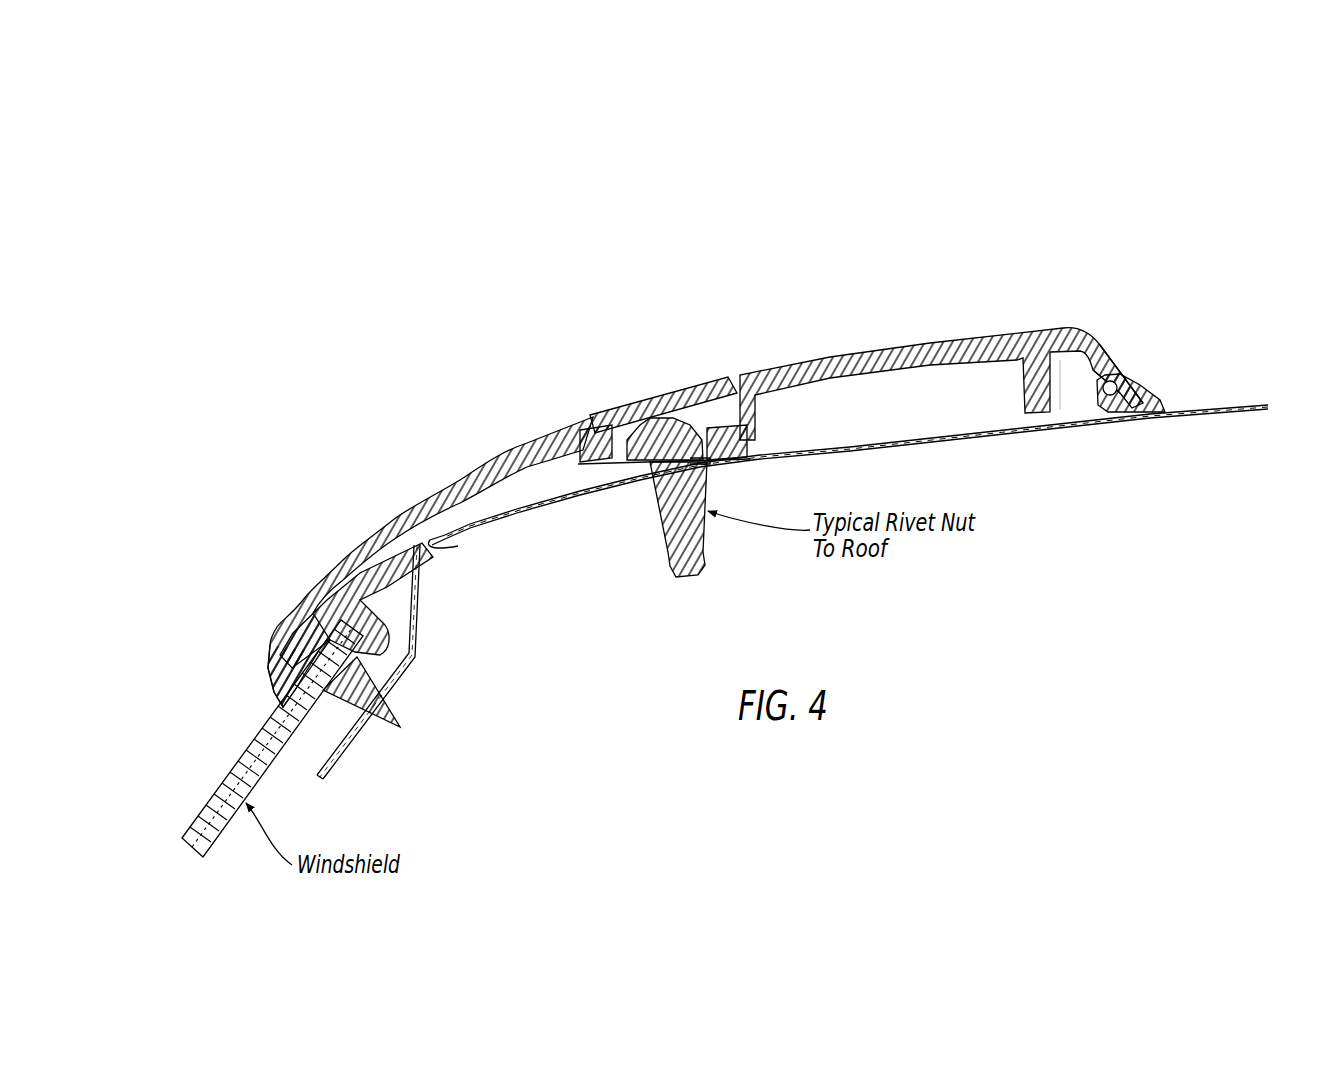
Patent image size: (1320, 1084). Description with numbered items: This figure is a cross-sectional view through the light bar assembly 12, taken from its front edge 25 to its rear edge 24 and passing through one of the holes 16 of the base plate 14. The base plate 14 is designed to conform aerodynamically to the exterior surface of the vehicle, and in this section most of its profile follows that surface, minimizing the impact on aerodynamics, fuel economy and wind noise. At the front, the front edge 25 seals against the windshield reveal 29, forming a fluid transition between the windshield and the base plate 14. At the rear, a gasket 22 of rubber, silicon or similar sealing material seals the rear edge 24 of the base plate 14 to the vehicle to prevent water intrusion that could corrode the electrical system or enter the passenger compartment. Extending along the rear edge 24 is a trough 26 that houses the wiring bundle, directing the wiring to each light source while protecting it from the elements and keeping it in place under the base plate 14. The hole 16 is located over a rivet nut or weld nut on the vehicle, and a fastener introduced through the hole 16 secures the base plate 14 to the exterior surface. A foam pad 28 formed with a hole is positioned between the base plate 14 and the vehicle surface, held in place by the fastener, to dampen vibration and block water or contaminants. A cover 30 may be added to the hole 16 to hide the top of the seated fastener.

The light bar assembly 12 is at (934, 188).
The base plate 14 is at (886, 362).
The holes 16 is at (638, 457).
The gasket 22 is at (1148, 396).
The rear edge 24 is at (1120, 350).
The front edge 25 is at (278, 640).
The trough 26 is at (1077, 392).
The foam pads 28 is at (578, 482).
The windshield reveal 29 is at (300, 672).
The covers 30 is at (643, 402).